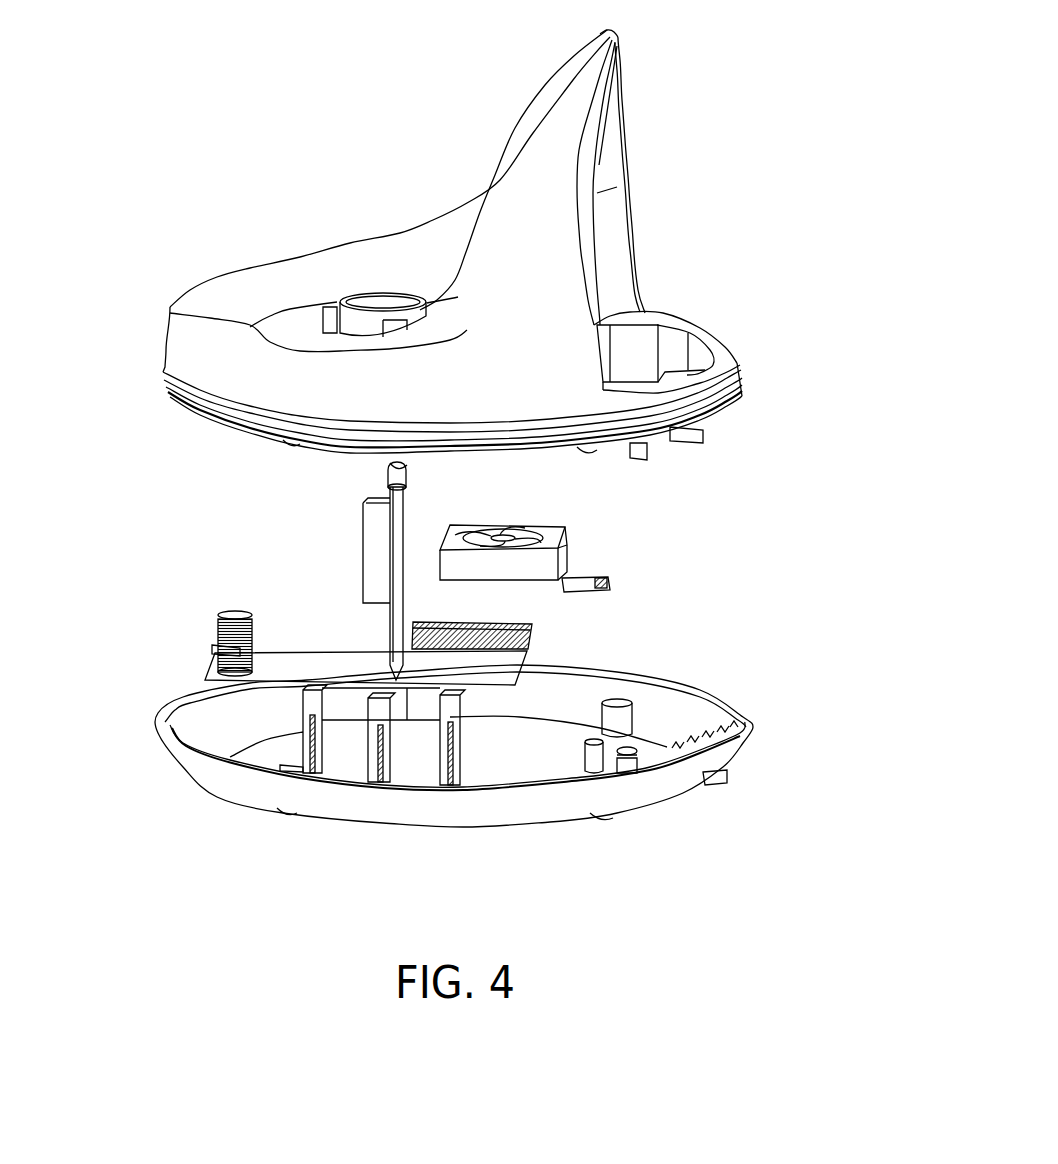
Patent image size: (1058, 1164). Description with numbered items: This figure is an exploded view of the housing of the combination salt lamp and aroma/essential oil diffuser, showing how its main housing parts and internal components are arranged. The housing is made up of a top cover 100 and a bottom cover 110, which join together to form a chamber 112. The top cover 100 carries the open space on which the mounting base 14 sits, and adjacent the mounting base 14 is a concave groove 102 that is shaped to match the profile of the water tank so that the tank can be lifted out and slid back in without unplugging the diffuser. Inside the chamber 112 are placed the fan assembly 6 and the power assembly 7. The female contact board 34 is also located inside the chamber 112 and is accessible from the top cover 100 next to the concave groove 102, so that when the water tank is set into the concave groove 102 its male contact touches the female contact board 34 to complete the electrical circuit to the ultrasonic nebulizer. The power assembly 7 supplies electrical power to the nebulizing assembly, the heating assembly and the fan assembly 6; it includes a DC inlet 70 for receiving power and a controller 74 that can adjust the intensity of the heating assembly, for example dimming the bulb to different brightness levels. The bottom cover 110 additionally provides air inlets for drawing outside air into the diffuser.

The top cover 100 is at (540, 173).
The mounting base 14 is at (360, 300).
The concave groove 102 is at (640, 360).
The fan assembly 6 is at (567, 542).
The female contact board 34 is at (610, 583).
The power assembly 7 is at (527, 653).
The DC inlet 70 is at (227, 613).
The controller 74 is at (217, 647).
The bottom cover 110 is at (677, 715).
The chamber 112 is at (233, 727).